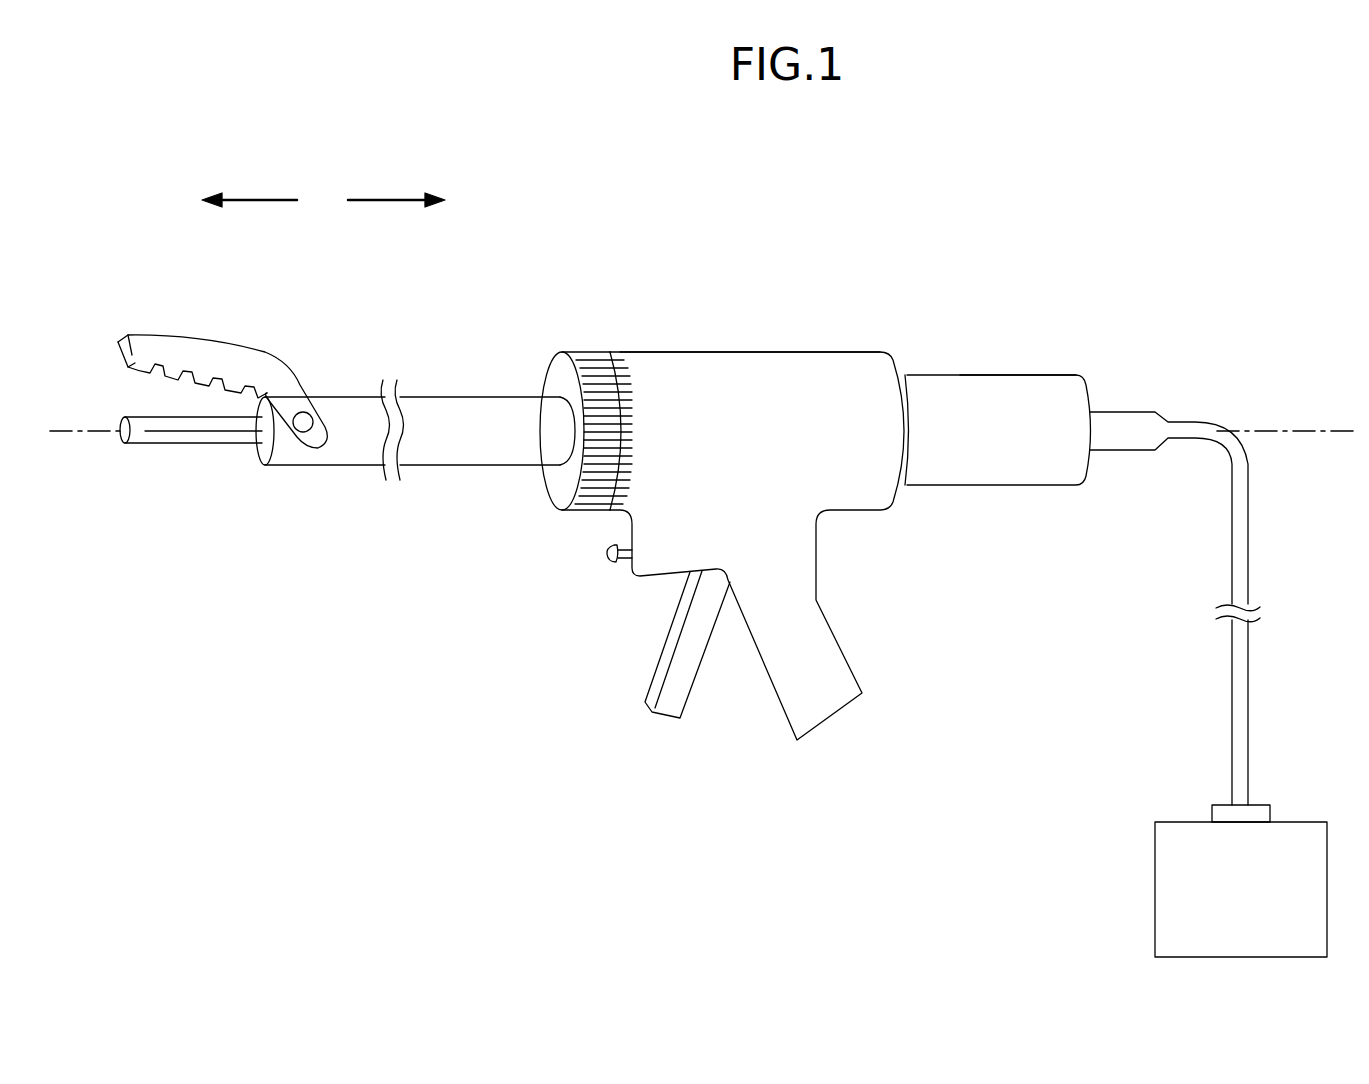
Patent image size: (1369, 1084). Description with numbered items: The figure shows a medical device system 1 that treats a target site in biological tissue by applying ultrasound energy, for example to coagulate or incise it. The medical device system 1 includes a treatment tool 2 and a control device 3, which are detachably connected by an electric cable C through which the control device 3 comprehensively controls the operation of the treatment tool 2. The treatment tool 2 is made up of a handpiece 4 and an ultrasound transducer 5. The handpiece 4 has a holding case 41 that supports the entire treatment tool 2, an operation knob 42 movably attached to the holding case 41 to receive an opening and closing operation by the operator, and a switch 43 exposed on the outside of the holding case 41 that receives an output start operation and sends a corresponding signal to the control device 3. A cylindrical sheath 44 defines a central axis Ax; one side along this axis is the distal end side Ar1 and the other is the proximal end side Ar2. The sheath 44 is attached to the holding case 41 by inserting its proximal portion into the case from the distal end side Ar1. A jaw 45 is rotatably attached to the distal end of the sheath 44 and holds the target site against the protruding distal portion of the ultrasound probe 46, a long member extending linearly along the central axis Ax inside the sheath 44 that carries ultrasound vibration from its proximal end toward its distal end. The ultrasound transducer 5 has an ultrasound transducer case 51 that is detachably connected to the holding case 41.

The medical device system 1 is at (1093, 232).
The treatment tool 2 is at (980, 272).
The control device 3 is at (1296, 836).
The handpiece 4 is at (812, 380).
The ultrasound transducer 5 is at (950, 390).
The holding case 41 is at (668, 368).
The operation knob 42 is at (683, 681).
The switch 43 is at (607, 556).
The sheath 44 is at (445, 410).
The jaw 45 is at (208, 348).
The ultrasound probe 46 is at (175, 447).
The ultrasound transducer case 51 is at (1025, 390).
The electric cable C is at (1240, 549).
The central axis Ax is at (1318, 428).
The distal end side Ar1 is at (250, 200).
The proximal end side Ar2 is at (393, 200).